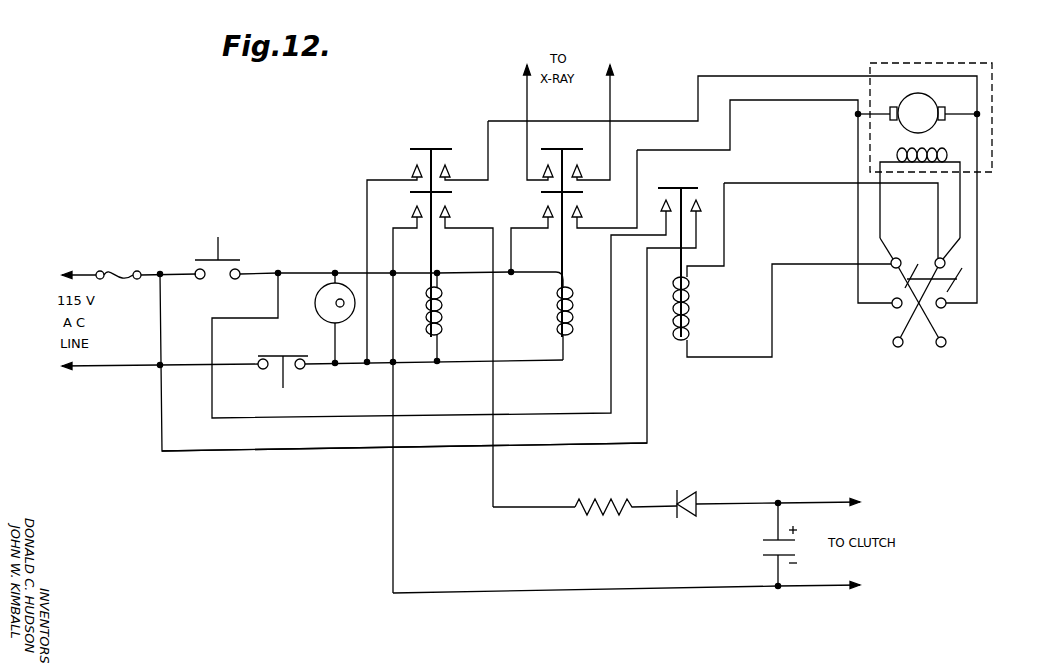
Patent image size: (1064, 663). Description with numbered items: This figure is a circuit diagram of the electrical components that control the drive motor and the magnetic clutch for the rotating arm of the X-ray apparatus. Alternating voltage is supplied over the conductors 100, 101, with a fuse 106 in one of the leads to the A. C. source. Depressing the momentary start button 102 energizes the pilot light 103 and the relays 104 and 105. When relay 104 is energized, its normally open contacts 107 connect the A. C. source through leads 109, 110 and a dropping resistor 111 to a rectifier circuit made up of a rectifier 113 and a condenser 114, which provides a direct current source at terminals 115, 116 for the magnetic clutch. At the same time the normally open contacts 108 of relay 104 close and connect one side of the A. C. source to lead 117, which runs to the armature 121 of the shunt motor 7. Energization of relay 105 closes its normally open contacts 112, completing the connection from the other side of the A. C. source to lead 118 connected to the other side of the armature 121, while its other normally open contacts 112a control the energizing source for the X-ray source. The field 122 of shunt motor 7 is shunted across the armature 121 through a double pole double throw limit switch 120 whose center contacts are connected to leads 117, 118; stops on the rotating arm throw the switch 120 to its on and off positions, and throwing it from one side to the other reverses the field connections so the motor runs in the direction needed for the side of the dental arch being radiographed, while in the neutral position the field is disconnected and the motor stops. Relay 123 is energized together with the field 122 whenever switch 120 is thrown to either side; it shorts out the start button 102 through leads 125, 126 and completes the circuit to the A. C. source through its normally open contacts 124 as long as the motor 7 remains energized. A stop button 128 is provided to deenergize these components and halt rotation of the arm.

The conductor 100 is at (92, 274).
The conductor 101 is at (121, 373).
The momentary start button 102 is at (250, 266).
The pilot light 103 is at (328, 284).
The relay 104 is at (421, 322).
The relay 105 is at (557, 322).
The fuse 106 is at (127, 273).
The normally open contacts 107 is at (413, 204).
The normally open contacts 108 is at (405, 158).
The lead 109 is at (533, 507).
The lead 110 is at (555, 591).
The dropping resistor 111 is at (588, 497).
The normally open contacts 112 is at (543, 206).
The normally open contacts 112a is at (538, 152).
The rectifier 113 is at (697, 498).
The condenser 114 is at (760, 546).
The terminal 115 is at (818, 501).
The terminal 116 is at (822, 593).
The lead 117 is at (505, 121).
The lead 118 is at (800, 102).
The double pole double throw limit switch 120 is at (958, 288).
The armature 121 is at (930, 106).
The field 122 is at (948, 149).
The relay 123 is at (690, 328).
The normally open contacts 124 is at (706, 193).
The lead 125 is at (573, 413).
The lead 126 is at (573, 443).
The stop button 128 is at (270, 375).
The shunt motor 7 is at (995, 116).